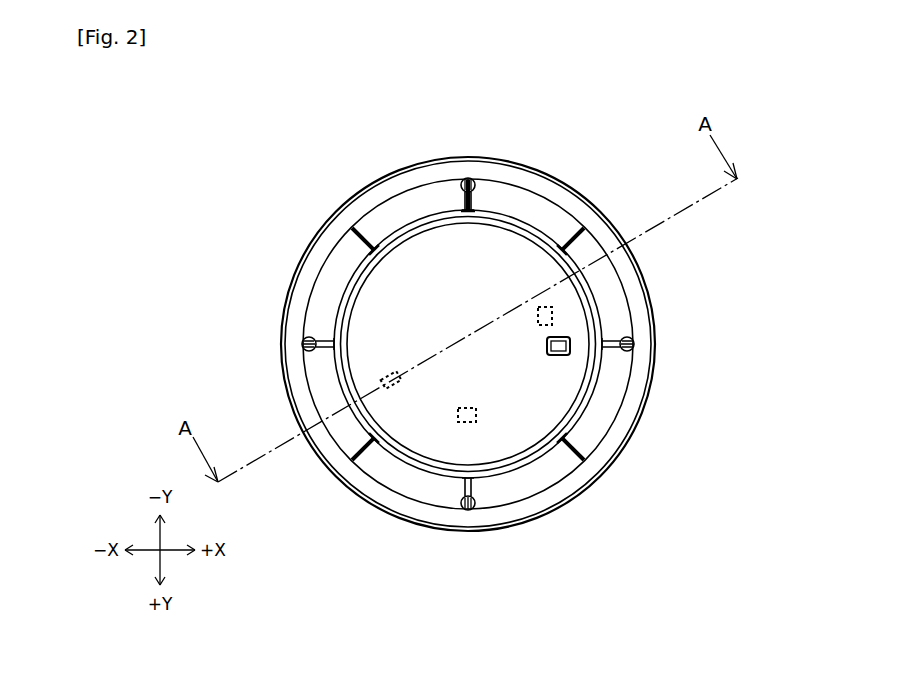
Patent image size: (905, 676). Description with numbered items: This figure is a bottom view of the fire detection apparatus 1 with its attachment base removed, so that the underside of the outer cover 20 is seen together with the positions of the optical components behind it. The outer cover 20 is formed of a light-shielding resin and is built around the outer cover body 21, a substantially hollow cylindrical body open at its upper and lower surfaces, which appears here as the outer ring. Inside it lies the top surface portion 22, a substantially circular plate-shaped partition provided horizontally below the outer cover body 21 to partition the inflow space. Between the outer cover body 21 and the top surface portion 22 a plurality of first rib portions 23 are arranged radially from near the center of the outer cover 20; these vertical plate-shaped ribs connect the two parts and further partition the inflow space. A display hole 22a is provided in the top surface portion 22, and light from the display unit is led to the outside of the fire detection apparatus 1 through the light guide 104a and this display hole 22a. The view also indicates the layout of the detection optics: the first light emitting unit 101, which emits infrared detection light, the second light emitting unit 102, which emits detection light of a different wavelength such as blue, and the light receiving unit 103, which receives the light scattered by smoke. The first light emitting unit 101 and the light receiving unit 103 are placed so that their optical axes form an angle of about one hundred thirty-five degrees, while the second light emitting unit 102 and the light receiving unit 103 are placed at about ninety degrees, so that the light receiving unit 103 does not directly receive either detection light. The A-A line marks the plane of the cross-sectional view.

The fire detection apparatus 1 is at (757, 130).
The outer cover 20 is at (518, 344).
The outer cover body 21 is at (649, 289).
The top surface portion 22 is at (377, 294).
The display hole 22a is at (595, 395).
The first rib portion 23 is at (372, 240).
The first light emitting unit 101 is at (383, 379).
The second light emitting unit 102 is at (458, 418).
The light receiving unit 103 is at (553, 309).
The light guide 104a is at (563, 357).